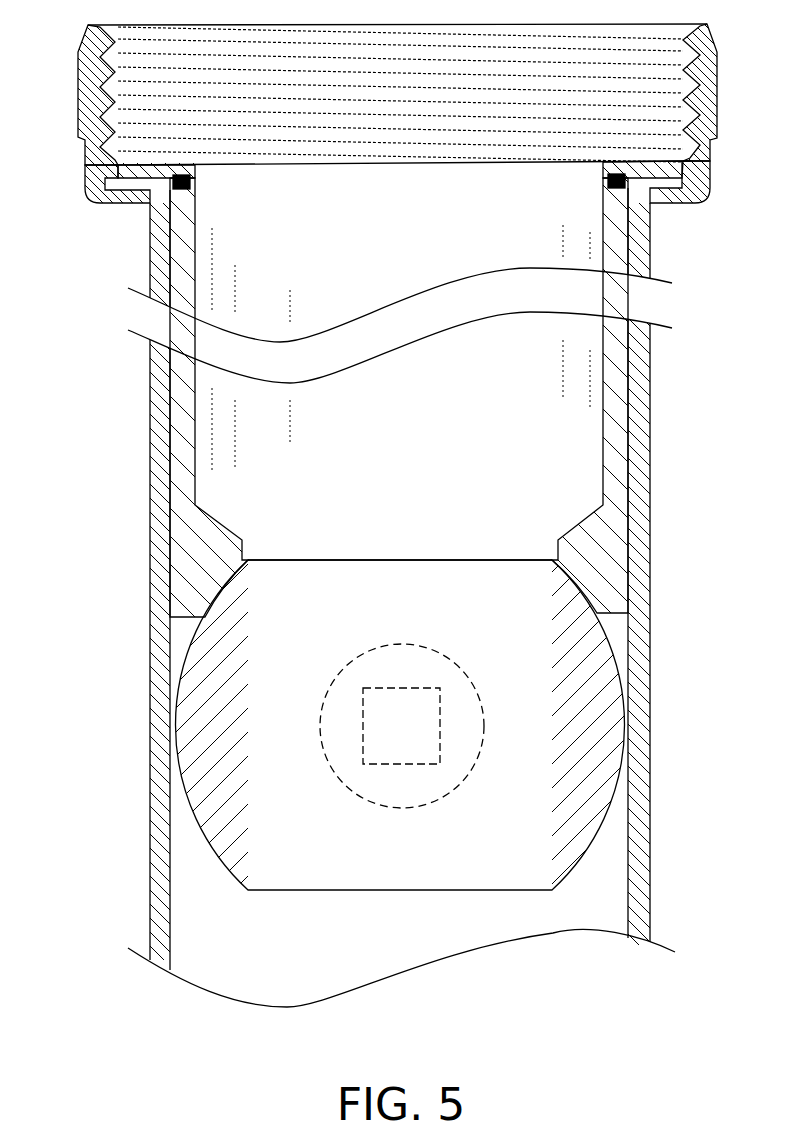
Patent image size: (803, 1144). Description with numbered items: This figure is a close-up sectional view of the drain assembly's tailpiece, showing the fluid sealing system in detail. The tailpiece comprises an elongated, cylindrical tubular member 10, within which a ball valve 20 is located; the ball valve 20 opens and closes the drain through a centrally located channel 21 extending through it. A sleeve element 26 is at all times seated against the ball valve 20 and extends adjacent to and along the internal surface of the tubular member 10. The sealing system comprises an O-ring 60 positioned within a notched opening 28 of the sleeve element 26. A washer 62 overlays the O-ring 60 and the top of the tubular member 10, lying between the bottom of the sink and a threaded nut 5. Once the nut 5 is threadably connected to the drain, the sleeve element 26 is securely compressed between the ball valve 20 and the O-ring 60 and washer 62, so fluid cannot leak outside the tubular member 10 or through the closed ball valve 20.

The threaded nut 5 is at (95, 97).
The tubular member 10 is at (166, 513).
The ball valve 20 is at (590, 737).
The channel 21 is at (320, 593).
The sleeve element 26 is at (190, 245).
The notched opening 28 is at (606, 180).
The O-ring 60 is at (190, 180).
The washer 62 is at (135, 172).